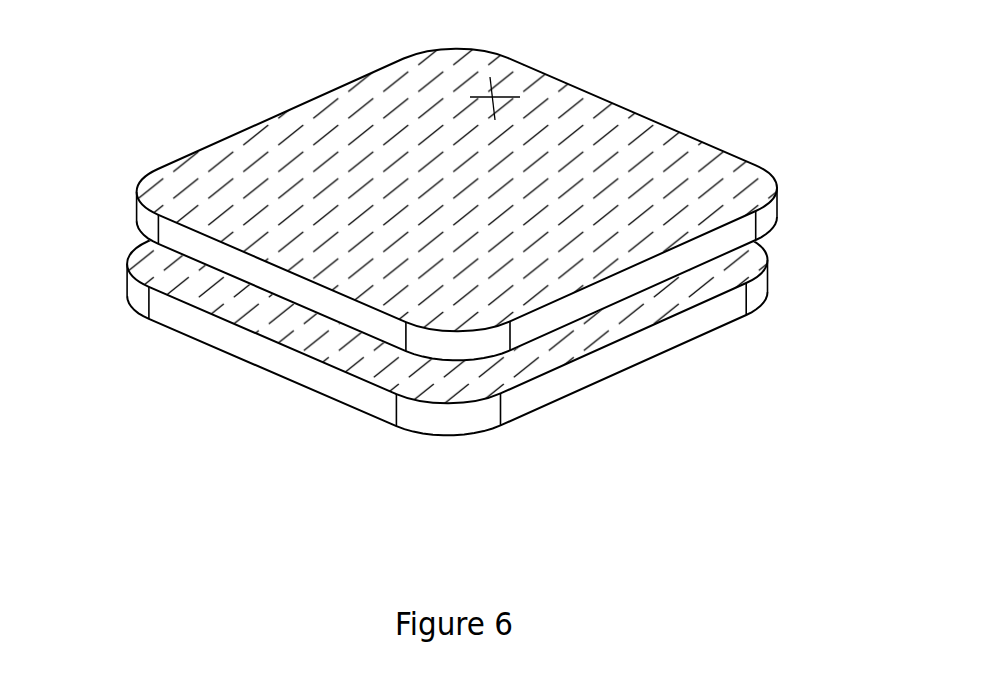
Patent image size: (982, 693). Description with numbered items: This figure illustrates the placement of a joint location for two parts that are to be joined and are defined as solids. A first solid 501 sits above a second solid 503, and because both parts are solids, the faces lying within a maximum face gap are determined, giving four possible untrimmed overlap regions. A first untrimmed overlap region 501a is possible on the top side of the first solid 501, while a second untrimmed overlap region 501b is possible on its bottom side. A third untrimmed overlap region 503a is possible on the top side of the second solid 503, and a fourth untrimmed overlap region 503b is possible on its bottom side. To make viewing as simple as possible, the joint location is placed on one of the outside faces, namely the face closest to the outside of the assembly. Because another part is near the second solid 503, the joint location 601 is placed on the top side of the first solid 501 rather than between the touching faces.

The first solid 501 is at (503, 205).
The first untrimmed overlap region 501a is at (750, 163).
The second untrimmed overlap region 501b is at (757, 246).
The second solid 503 is at (447, 278).
The third untrimmed overlap region 503a is at (447, 262).
The fourth untrimmed overlap region 503b is at (447, 347).
The joint location 601 is at (493, 118).